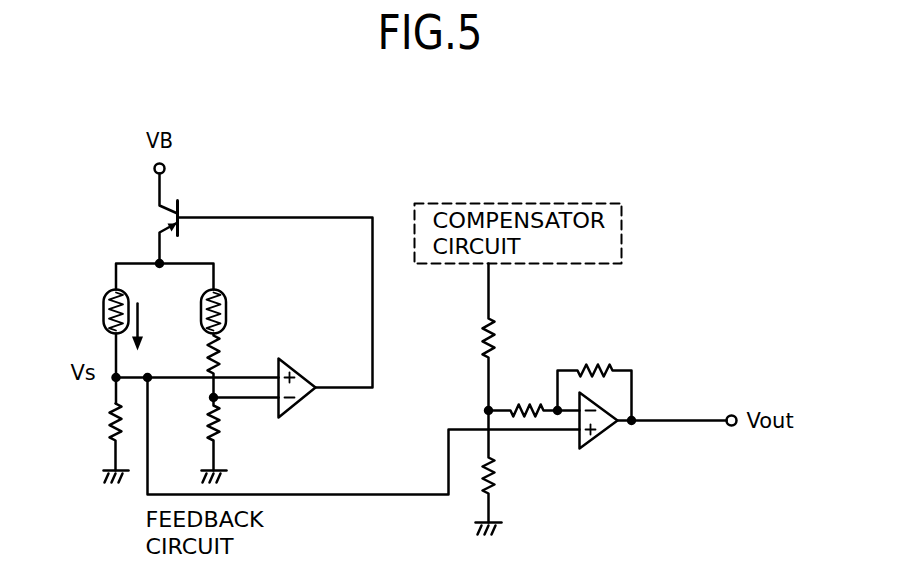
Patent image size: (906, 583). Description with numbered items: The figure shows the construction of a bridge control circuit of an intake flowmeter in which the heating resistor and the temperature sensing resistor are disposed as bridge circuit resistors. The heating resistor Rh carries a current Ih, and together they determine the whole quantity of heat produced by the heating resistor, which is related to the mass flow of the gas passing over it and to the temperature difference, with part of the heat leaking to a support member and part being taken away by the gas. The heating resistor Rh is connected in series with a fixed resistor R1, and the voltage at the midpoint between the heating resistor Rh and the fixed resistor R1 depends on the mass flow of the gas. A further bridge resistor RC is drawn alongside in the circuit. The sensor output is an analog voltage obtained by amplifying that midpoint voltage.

The heating resistor Rh is at (97, 312).
The compensation resistor RC is at (234, 380).
The fixed resistor R1 is at (95, 437).
The current flowing through the heating resistor Ih is at (150, 327).